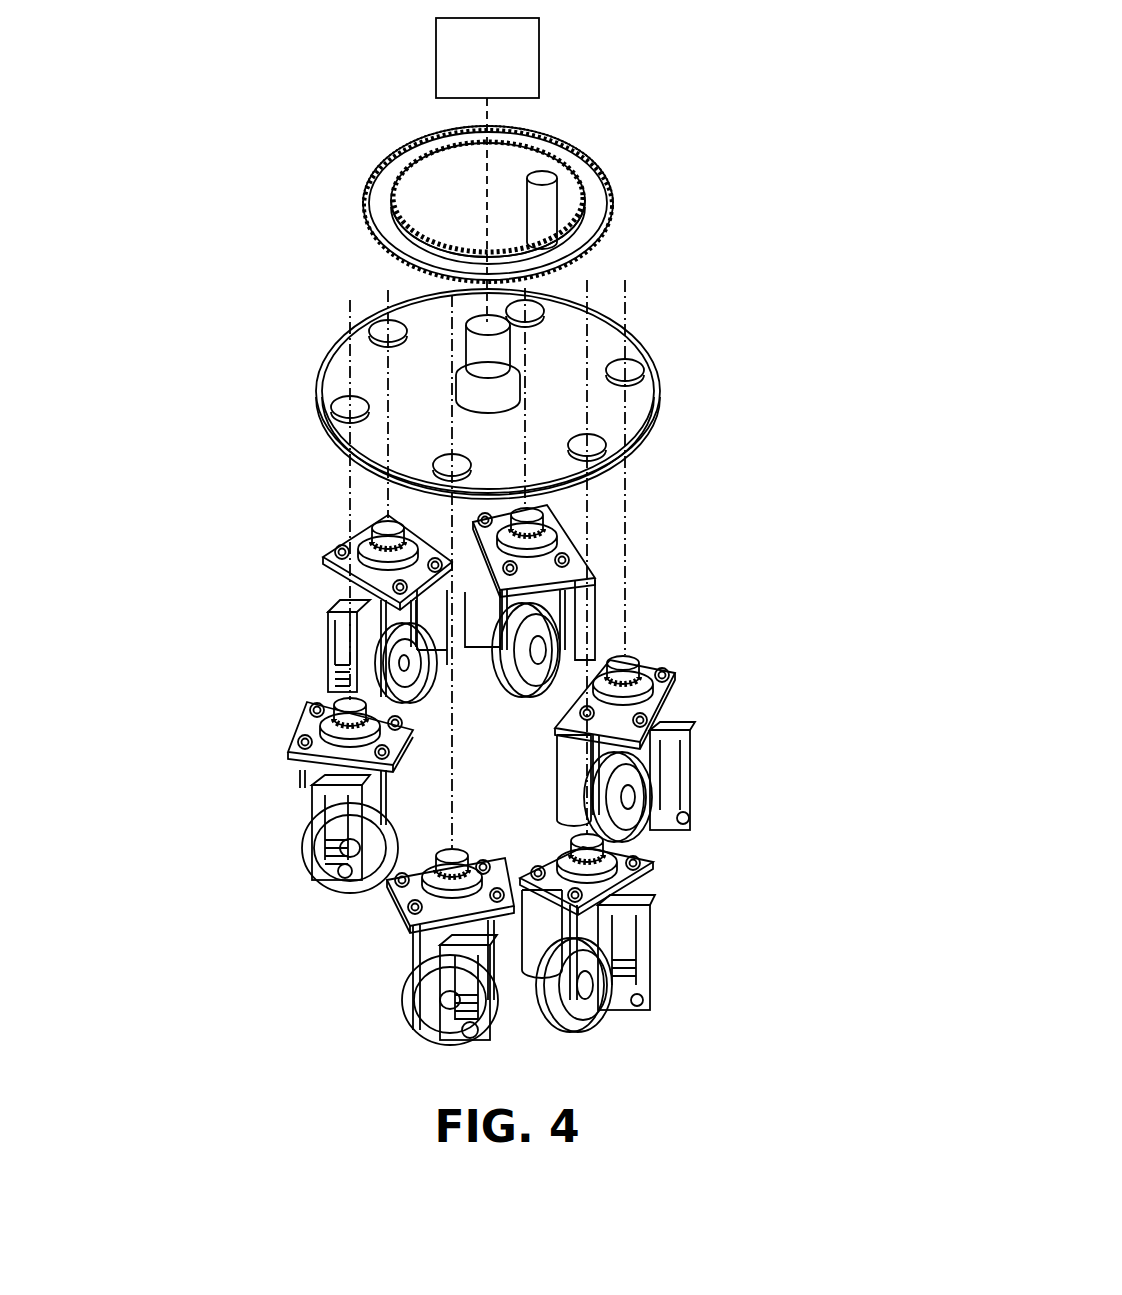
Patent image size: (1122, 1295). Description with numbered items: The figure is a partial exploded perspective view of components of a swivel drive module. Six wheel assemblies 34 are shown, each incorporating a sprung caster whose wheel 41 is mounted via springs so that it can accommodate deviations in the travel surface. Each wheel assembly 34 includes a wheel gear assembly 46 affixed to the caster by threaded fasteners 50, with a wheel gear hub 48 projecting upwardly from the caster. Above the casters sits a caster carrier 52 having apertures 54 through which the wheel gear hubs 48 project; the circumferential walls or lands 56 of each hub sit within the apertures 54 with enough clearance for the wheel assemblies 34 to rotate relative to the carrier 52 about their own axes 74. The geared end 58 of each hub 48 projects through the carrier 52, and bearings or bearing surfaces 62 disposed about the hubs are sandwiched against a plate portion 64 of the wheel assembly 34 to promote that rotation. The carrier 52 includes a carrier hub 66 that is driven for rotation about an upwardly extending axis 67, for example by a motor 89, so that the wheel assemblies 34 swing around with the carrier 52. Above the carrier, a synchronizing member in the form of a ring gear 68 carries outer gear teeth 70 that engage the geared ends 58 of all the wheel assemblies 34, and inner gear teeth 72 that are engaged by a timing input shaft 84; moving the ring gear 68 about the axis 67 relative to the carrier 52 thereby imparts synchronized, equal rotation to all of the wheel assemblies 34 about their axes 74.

The wheel assembly 34 is at (313, 643).
The wheel 41 is at (530, 682).
The wheel gear assembly 46 is at (290, 723).
The wheel gear hub 48 is at (670, 660).
The threaded fasteners 50 is at (333, 545).
The caster carrier 52 is at (491, 348).
The apertures 54 is at (362, 318).
The circumferential walls or lands 56 is at (667, 705).
The geared end 58 is at (633, 657).
The bearings or bearing surfaces 62 is at (553, 533).
The plate portion 64 is at (388, 737).
The carrier hub 66 is at (490, 353).
The axis 67 is at (483, 137).
The ring gear 68 is at (453, 159).
The outer gear teeth 70 is at (527, 132).
The inner gear teeth 72 is at (393, 212).
The axes 74 is at (345, 477).
The timing input shaft 84 is at (560, 205).
The motor 89 is at (539, 32).